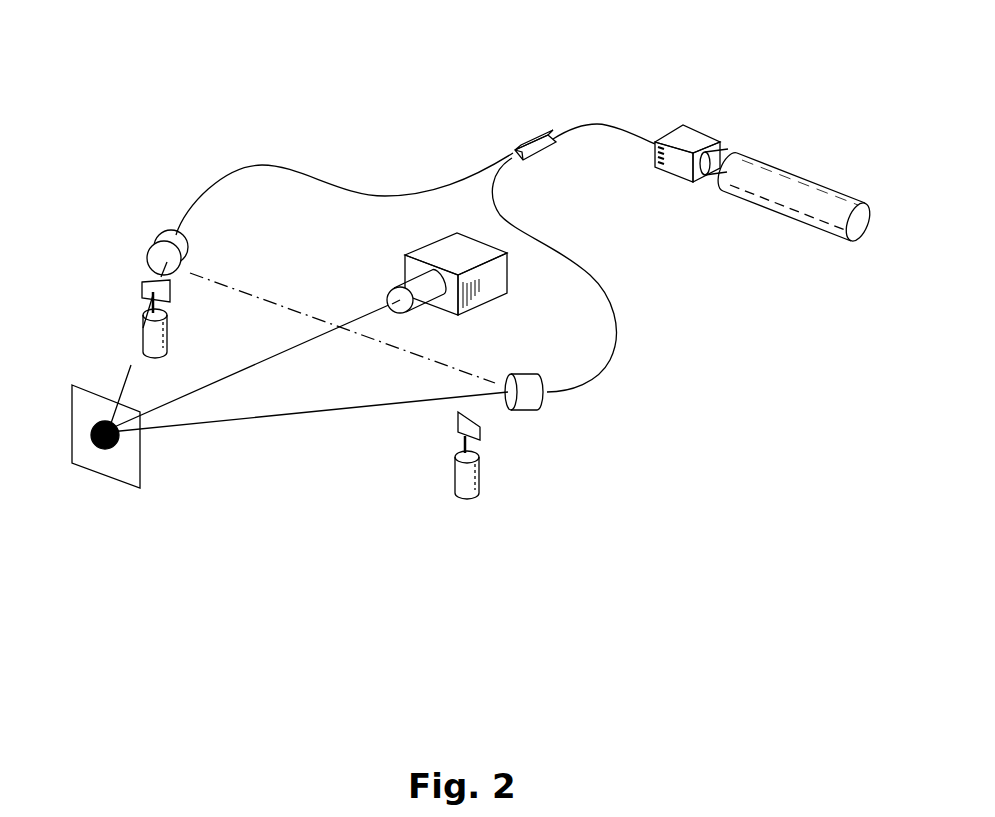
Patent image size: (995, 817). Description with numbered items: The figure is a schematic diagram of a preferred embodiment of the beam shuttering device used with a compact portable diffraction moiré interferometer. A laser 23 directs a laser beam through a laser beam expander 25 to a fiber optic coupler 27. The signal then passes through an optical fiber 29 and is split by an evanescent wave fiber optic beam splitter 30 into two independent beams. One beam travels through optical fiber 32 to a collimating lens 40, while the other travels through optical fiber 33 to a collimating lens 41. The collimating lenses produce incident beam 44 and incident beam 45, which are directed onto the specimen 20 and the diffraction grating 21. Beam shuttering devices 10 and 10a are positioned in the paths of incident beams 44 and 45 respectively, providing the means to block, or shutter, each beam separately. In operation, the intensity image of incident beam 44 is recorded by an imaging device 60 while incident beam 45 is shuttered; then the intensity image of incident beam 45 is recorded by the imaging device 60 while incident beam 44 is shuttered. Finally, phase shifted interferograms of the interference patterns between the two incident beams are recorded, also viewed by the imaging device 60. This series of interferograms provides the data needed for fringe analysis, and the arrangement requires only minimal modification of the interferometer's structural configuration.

The beam shuttering device 10 is at (140, 288).
The beam shuttering device 10a is at (492, 446).
The specimen 20 is at (108, 485).
The diffraction grating 21 is at (90, 435).
The laser 23 is at (798, 148).
The laser beam expander 25 is at (740, 140).
The fiber optic coupler 27 is at (689, 123).
The optical fiber 29 is at (598, 122).
The evanescent wave fiber optic beam splitter 30 is at (524, 143).
The optical fiber 32 is at (252, 160).
The optical fiber 33 is at (620, 320).
The collimating lens 40 is at (150, 235).
The collimating lens 41 is at (541, 414).
The incident beam 44 is at (130, 355).
The incident beam 45 is at (282, 423).
The imaging device 60 is at (403, 265).